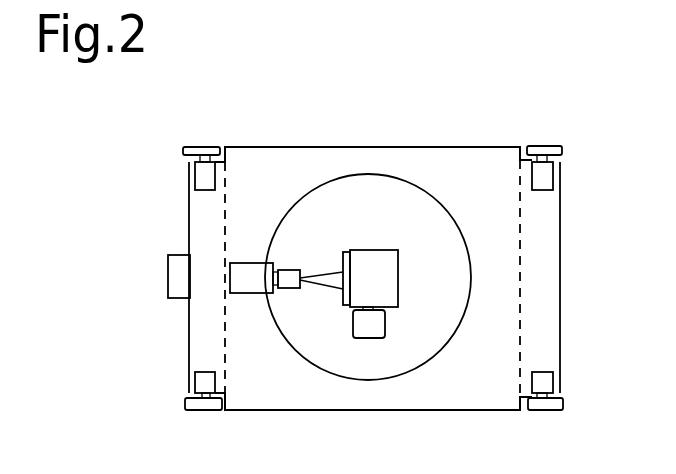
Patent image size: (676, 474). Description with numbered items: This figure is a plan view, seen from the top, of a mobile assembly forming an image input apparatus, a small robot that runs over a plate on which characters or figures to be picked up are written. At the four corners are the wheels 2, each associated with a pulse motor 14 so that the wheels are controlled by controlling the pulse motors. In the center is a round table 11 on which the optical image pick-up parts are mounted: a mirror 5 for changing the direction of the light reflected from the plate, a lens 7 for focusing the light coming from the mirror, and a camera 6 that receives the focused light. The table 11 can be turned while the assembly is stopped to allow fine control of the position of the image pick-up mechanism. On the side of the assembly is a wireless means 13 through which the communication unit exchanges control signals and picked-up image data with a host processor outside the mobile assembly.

The wheels 2 is at (200, 147).
The mirror 5 is at (345, 251).
The camera 6 is at (250, 268).
The lens 7 is at (292, 289).
The round table 11 is at (440, 204).
The wireless means 13 is at (168, 283).
The pulse motors 14 is at (195, 185).